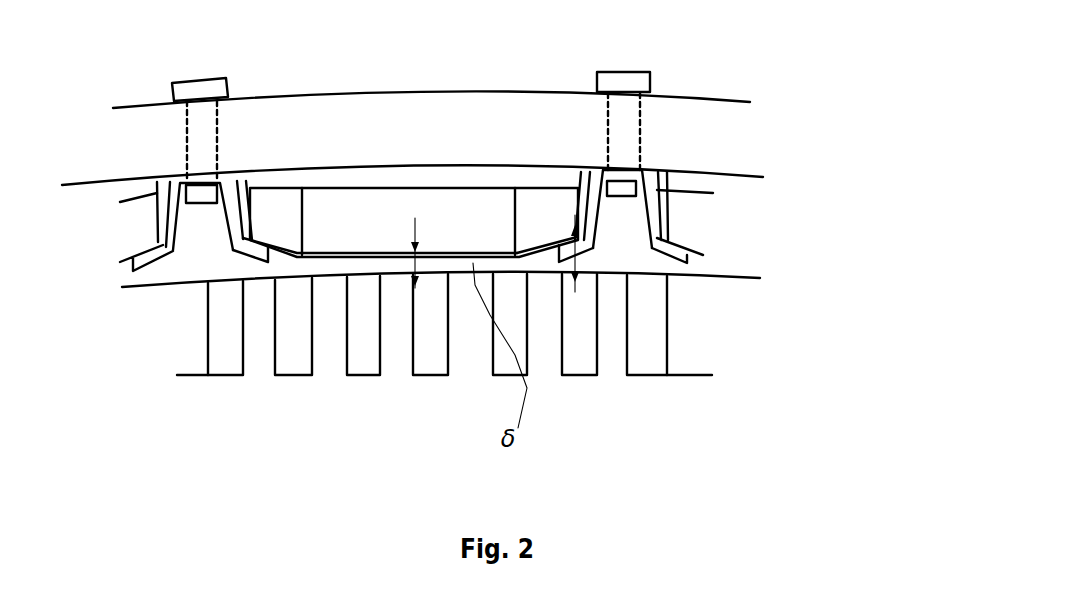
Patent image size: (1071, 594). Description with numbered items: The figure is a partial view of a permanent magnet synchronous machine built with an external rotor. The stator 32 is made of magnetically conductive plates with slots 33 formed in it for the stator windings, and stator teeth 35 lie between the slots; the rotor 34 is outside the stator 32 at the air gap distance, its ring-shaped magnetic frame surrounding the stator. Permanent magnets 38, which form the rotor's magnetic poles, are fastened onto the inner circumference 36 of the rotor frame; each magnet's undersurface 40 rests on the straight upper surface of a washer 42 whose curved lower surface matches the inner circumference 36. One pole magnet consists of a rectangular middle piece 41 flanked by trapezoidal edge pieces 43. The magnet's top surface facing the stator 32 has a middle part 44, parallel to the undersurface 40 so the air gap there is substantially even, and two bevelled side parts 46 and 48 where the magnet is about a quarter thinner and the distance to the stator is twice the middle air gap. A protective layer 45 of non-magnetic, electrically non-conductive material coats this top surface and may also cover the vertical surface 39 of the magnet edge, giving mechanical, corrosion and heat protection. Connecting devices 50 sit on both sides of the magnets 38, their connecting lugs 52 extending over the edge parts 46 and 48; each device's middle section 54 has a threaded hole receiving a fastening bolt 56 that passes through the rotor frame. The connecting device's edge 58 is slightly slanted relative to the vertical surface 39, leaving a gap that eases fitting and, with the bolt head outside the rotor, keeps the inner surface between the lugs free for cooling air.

The stator 32 is at (441, 348).
The slots 33 is at (325, 298).
The rotor 34 is at (431, 116).
The sealing fin 35 is at (292, 305).
The inner circumference of the rotor's magnetic frame 36 is at (265, 210).
The permanent magnets 38 is at (393, 203).
The vertical surface of the permanent magnet's edge 39 is at (580, 210).
The undersurface 40 is at (373, 188).
The middle piece 41 is at (468, 212).
The washer 42 is at (550, 207).
The edge pieces 43 is at (243, 212).
The middle part 44 is at (395, 262).
The protective layer 45 is at (498, 257).
The side part 46 is at (272, 255).
The side part 48 is at (572, 278).
The connecting devices 50 is at (177, 210).
The connecting lugs 52 is at (235, 252).
The middle section 54 is at (643, 163).
The fastening bolt 56 is at (186, 92).
The edge of the connecting device 58 is at (660, 187).